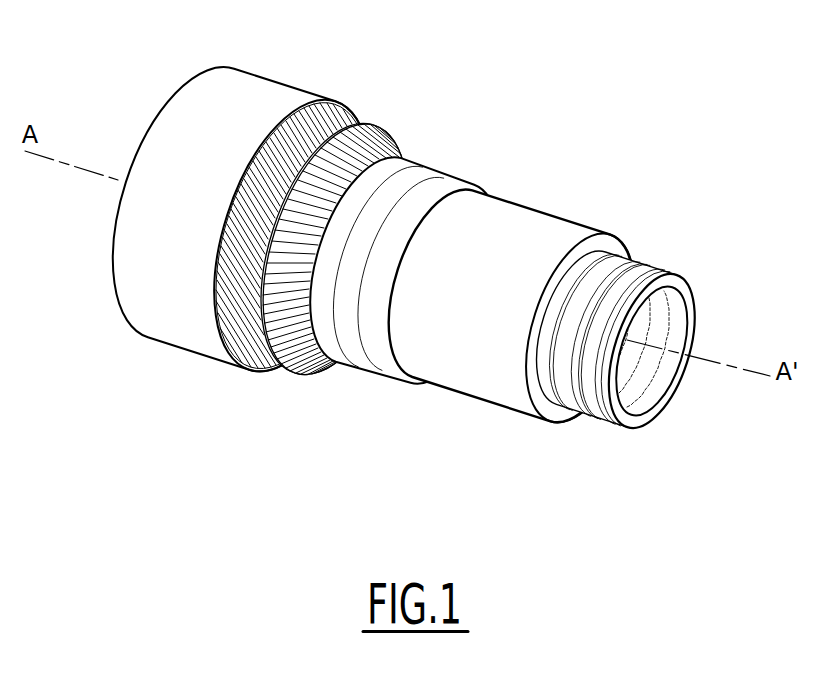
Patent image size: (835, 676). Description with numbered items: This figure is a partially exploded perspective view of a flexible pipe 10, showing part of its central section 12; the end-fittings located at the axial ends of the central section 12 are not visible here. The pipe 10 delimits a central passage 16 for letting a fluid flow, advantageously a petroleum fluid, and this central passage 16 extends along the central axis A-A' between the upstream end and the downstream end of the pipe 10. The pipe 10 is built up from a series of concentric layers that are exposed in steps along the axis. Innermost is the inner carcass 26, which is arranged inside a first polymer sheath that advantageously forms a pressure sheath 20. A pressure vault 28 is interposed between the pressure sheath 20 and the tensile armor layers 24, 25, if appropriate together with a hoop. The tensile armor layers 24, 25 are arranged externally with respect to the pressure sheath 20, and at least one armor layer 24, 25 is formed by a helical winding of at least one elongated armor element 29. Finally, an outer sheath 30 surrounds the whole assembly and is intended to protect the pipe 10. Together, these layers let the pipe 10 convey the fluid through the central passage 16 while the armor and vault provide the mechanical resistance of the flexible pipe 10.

The flexible pipe 10 is at (432, 230).
The central section 12 is at (482, 257).
The central passage 16 is at (655, 333).
The pressure sheath 20 is at (532, 232).
The tensile armor layer 24 is at (368, 132).
The tensile armor layer 25 is at (293, 135).
The inner carcass 26 is at (633, 273).
The pressure vault 28 is at (423, 177).
The elongated armor element 29 is at (288, 310).
The outer sheath 30 is at (217, 115).